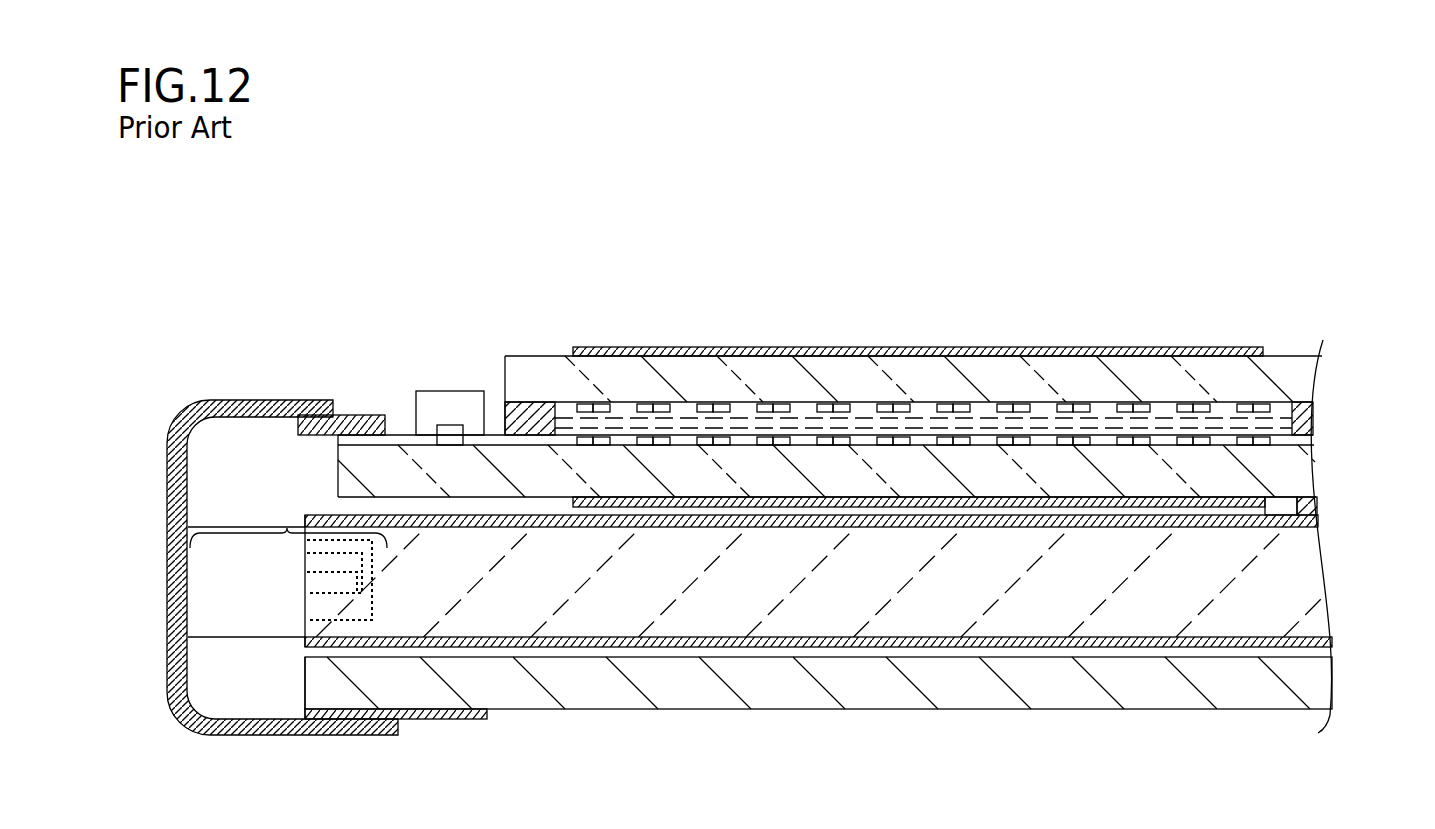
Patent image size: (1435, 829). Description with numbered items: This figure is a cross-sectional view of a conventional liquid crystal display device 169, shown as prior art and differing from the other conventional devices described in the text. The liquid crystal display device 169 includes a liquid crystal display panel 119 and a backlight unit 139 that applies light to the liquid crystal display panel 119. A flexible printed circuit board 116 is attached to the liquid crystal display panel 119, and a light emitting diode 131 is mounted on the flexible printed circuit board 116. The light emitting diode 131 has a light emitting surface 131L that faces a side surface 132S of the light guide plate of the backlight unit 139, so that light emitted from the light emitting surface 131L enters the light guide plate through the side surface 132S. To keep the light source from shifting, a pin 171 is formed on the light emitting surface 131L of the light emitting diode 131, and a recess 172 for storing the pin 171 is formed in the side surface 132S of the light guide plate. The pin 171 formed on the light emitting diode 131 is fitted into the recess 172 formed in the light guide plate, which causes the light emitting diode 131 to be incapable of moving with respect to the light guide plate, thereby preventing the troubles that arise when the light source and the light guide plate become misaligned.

The liquid crystal display device 169 is at (197, 320).
The flexible printed circuit board 116 is at (188, 468).
The liquid crystal display panel 119 is at (1341, 343).
The backlight unit 139 is at (1341, 518).
The light emitting diode 131 is at (287, 528).
The light emitting surface 131L is at (307, 551).
The pin 171 is at (327, 581).
The recess 172 is at (307, 592).
The side surface of light guide plate 132S is at (305, 628).